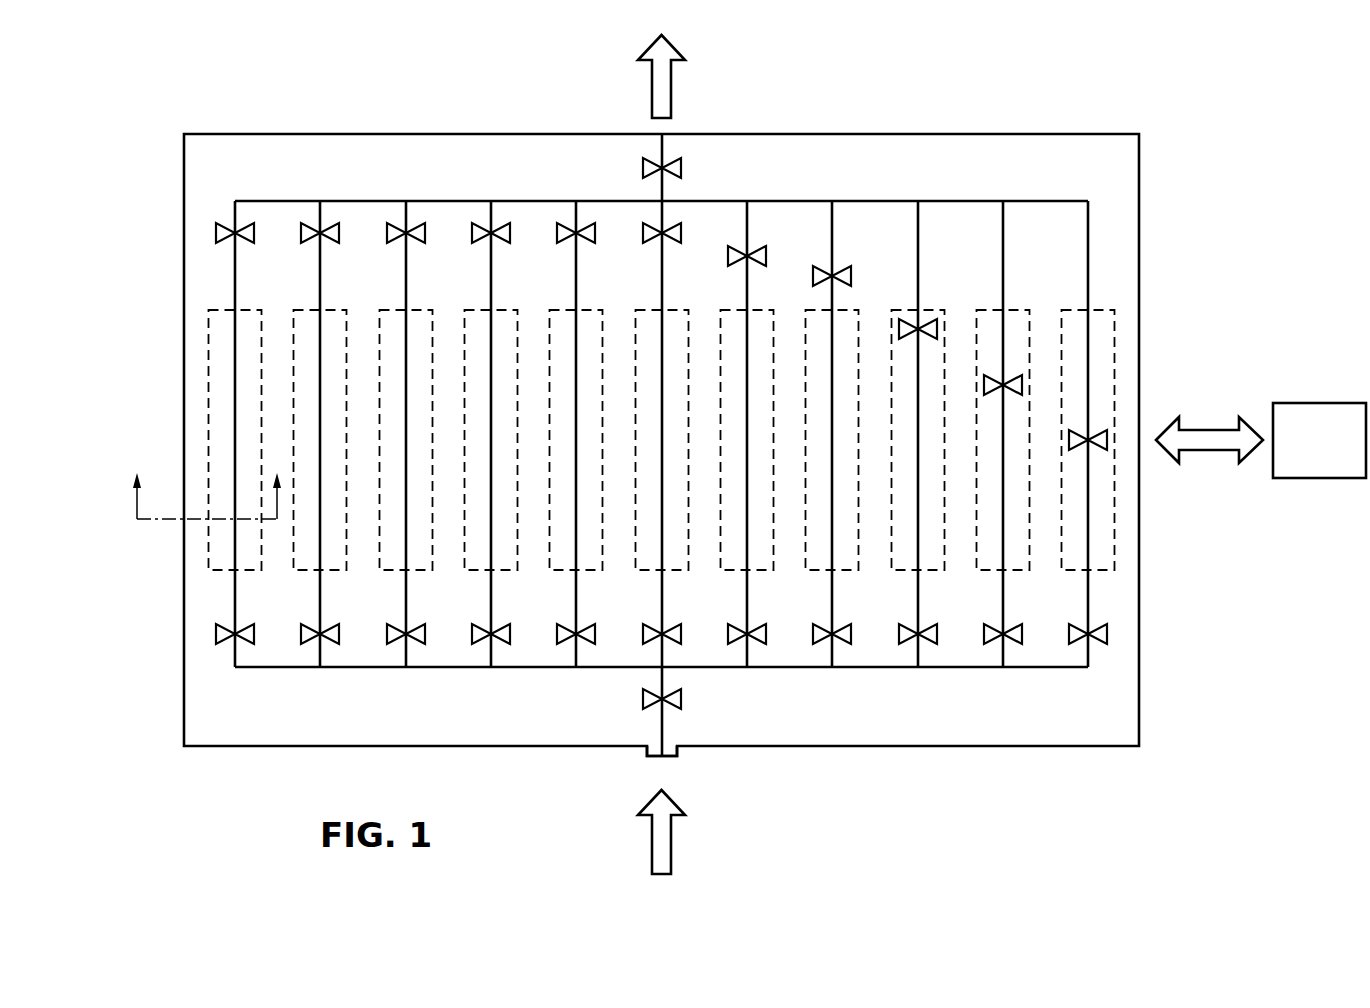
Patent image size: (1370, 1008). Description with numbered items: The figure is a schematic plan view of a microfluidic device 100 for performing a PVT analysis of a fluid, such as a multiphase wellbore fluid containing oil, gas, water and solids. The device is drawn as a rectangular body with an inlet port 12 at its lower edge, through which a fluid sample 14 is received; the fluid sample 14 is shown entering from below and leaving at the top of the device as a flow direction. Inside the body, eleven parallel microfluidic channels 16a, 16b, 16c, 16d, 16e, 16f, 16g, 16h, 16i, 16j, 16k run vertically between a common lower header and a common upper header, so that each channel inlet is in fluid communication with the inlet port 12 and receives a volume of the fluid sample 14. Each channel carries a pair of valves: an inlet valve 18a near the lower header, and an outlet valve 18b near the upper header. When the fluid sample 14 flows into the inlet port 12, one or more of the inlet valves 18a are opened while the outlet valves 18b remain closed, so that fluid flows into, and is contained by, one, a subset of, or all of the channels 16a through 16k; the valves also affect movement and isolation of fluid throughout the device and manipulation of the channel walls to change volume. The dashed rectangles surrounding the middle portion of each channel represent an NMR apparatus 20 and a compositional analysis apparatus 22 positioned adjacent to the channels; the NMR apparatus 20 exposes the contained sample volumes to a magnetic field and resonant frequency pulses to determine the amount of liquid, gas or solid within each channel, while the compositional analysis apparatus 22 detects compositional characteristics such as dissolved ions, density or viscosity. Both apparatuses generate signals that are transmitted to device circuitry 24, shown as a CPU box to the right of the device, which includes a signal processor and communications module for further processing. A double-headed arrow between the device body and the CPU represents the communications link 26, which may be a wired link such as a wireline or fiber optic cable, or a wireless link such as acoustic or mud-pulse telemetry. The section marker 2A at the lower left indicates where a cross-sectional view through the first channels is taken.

The microfluidic device 100 is at (206, 93).
The inlet port 12 is at (660, 760).
The fluid sample 14 is at (671, 92).
The microfluidic channel 16a is at (233, 602).
The microfluidic channel 16b is at (320, 595).
The microfluidic channel 16c is at (406, 595).
The microfluidic channel 16d is at (491, 595).
The microfluidic channel 16e is at (576, 595).
The microfluidic channel 16f is at (662, 595).
The microfluidic channel 16g is at (747, 218).
The microfluidic channel 16h is at (832, 228).
The microfluidic channel 16i is at (918, 228).
The microfluidic channel 16j is at (1003, 228).
The microfluidic channel 16k is at (1088, 237).
The inlet valve 18a is at (216, 634).
The outlet valve 18b is at (648, 162).
The NMR apparatus 20 is at (292, 333).
The compositional analysis apparatus 22 is at (654, 440).
The device circuitry 24 is at (1313, 403).
The communications link 26 is at (1212, 428).
The section line 2A is at (199, 481).